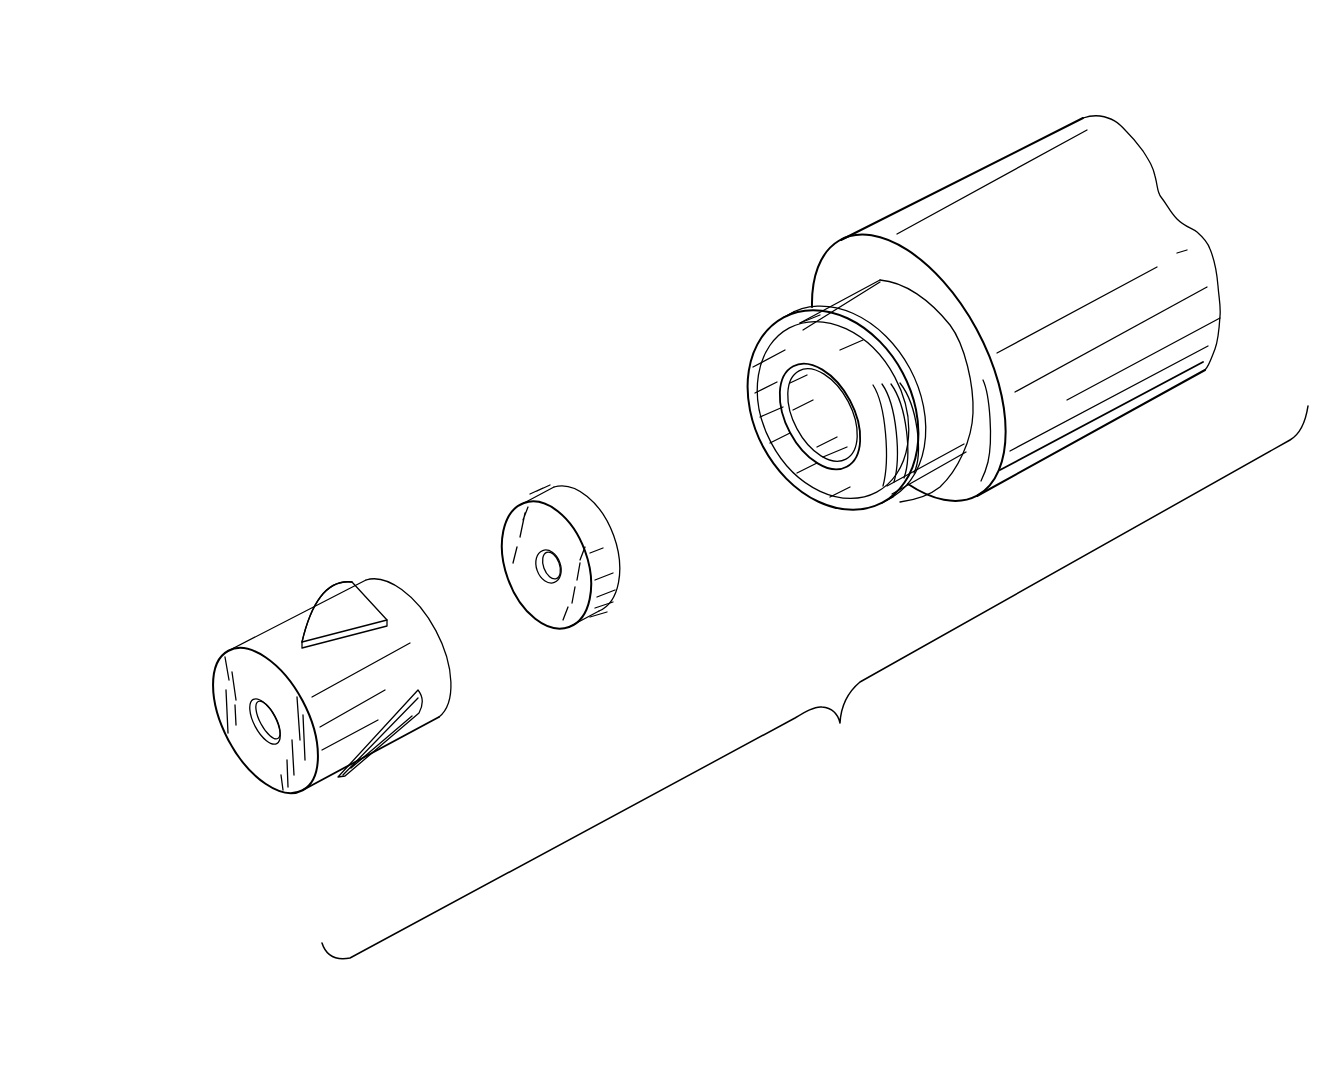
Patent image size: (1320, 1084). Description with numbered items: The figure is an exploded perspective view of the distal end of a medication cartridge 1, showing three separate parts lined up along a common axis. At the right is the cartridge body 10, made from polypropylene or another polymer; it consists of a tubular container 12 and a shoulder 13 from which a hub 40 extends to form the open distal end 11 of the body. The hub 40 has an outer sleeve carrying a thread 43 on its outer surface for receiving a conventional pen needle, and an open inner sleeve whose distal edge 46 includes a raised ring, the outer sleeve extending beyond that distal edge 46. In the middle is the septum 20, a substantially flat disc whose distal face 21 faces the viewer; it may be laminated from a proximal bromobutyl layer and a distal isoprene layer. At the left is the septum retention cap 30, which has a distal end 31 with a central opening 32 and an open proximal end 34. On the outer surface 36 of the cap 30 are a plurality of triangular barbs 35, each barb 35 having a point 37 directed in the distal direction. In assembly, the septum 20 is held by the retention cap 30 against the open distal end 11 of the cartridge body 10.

The medication cartridge 1 is at (758, 222).
The cartridge body 10 is at (985, 150).
The open distal end 11 is at (846, 512).
The tubular container 12 is at (1103, 408).
The shoulder 13 is at (985, 492).
The hub 40 is at (945, 428).
The thread 43 is at (808, 313).
The distal edge 46 is at (792, 482).
The septum 20 is at (583, 482).
The distal face 21 is at (560, 622).
The septum retention cap 30 is at (290, 605).
The distal end 31 is at (298, 775).
The opening 32 is at (247, 710).
The open proximal end 34 is at (368, 590).
The triangular barbs 35 is at (338, 614).
The outer surface 36 is at (436, 688).
The point 37 is at (302, 640).